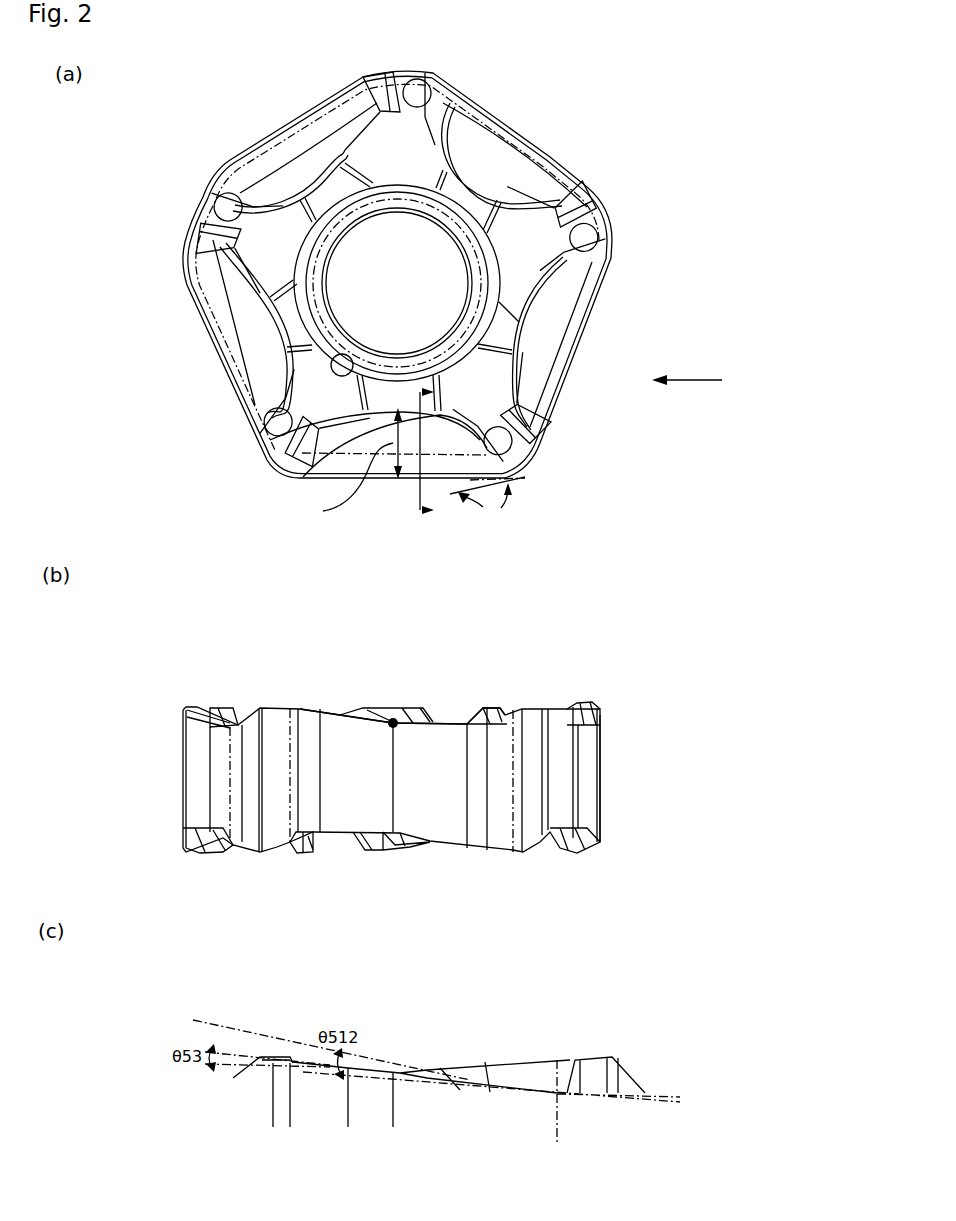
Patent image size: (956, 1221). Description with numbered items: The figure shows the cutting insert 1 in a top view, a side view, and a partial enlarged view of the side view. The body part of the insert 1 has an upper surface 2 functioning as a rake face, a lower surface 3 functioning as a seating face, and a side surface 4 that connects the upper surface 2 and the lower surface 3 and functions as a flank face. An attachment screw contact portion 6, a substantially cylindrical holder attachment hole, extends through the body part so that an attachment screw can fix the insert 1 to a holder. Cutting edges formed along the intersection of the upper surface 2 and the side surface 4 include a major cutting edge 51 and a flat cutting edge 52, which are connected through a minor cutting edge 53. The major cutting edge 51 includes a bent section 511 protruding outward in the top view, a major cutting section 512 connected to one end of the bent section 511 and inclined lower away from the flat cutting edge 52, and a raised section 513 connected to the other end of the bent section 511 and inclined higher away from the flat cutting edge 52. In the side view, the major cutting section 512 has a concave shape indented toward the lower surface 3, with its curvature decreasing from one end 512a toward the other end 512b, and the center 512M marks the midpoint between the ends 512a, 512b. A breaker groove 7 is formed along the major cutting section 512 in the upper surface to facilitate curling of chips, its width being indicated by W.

The insert 1 is at (488, 557).
The upper surface 2 is at (200, 705).
The lower surface 3 is at (305, 852).
The side surface 4 is at (606, 793).
The attachment screw contact portion 6 is at (420, 277).
The breaker groove 7 is at (537, 351).
The major cutting edge 51 is at (736, 193).
The flat cutting edge 52 is at (512, 471).
The minor cutting edge 53 is at (528, 450).
The bent section 511 is at (613, 261).
The major cutting section 512 is at (605, 304).
The raised section 513 is at (612, 250).
The one end of the major cutting section 512a is at (322, 706).
The other end of the major cutting section 512b is at (465, 720).
The center of the major cutting section 512M is at (401, 756).